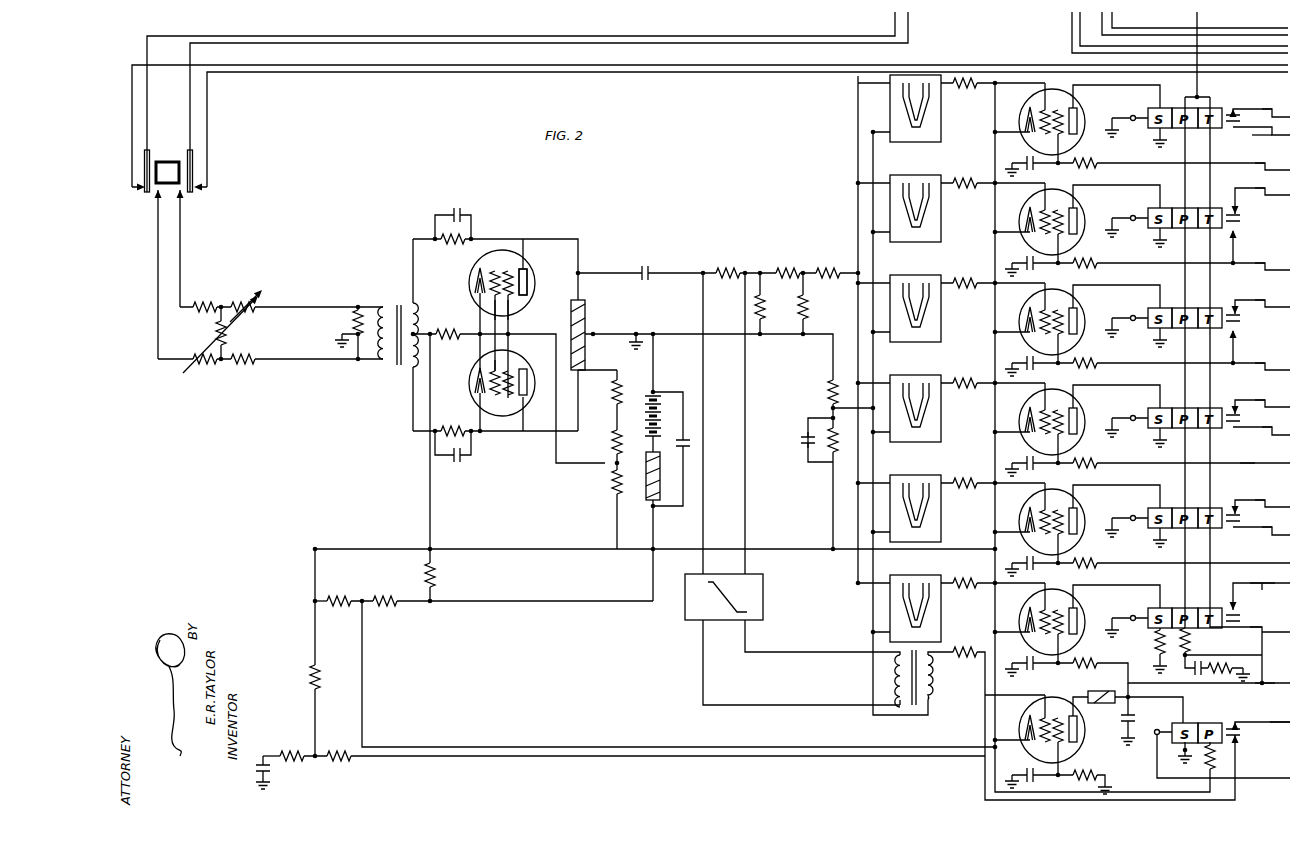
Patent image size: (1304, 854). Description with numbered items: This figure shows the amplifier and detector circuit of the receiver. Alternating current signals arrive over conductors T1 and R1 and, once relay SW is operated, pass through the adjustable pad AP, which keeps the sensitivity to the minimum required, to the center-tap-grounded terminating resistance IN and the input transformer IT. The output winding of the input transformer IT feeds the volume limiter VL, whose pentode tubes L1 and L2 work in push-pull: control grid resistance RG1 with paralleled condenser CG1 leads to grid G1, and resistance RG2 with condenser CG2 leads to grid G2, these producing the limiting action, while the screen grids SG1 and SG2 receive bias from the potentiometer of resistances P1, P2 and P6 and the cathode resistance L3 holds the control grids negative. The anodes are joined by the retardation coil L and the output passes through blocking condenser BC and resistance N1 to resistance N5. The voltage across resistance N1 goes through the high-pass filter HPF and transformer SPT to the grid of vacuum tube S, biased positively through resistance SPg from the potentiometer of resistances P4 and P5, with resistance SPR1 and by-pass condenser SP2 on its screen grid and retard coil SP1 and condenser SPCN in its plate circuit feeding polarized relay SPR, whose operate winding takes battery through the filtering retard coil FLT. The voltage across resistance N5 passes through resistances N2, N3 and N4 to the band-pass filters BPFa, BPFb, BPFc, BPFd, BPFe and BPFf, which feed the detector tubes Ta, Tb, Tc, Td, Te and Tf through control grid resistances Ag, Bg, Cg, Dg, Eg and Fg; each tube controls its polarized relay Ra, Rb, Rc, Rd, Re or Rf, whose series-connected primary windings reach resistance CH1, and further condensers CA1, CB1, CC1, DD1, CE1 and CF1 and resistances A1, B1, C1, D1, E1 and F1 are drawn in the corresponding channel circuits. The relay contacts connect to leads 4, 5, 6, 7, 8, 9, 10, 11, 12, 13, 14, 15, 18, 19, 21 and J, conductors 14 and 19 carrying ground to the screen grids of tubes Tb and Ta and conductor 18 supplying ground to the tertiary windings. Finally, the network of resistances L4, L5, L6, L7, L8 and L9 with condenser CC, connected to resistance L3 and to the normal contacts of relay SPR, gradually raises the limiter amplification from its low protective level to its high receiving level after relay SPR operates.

The trunk conductor T1 is at (147, 49).
The trunk conductor R1 is at (190, 49).
The relay SW is at (167, 162).
The adjustable pad AP is at (226, 305).
The terminating resistance IN is at (361, 322).
The input transformer IT is at (402, 366).
The cathode resistance L3 is at (448, 330).
The resistance L7 is at (441, 575).
The control grid resistance RG1 is at (453, 249).
The condenser CG1 is at (457, 208).
The volume limiter VL is at (502, 302).
The grid G1 is at (494, 310).
The grid G2 is at (494, 362).
The screen grid SG1 is at (512, 306).
The vacuum tube L1 is at (530, 288).
The vacuum tube L2 is at (519, 362).
The screen grid SG2 is at (508, 398).
The control grid resistance RG2 is at (450, 426).
The condenser CG2 is at (460, 463).
The retardation coil L is at (596, 333).
The blocking condenser BC is at (647, 266).
The resistance N1 is at (729, 267).
The resistance N2 is at (788, 267).
The resistance N3 is at (828, 267).
The resistance N4 is at (809, 311).
The resistance N5 is at (766, 311).
The potentiometer resistance P6 is at (612, 390).
The potentiometer resistance P1 is at (612, 446).
The potentiometer resistance P2 is at (612, 484).
The filtering retard coil FLT is at (639, 488).
The potentiometer resistance P4 is at (827, 393).
The potentiometer resistance P5 is at (828, 446).
The high-pass filter HPF is at (764, 583).
The input transformer SPT is at (912, 705).
The control grid resistance SPg is at (968, 658).
The resistance L5 is at (344, 598).
The resistance L4 is at (388, 598).
The resistance L6 is at (310, 677).
The resistance L8 is at (298, 751).
The resistance L9 is at (344, 752).
The condenser CC is at (274, 772).
The band-pass filter BPFf is at (890, 77).
The control grid resistance Fg is at (965, 88).
The vacuum tube Tf is at (1079, 110).
The condenser CF1 is at (1027, 160).
The resistor F1 is at (1092, 160).
The polarized relay Rf is at (1213, 108).
The relay contact lead 4 is at (1262, 109).
The contact of relay KP3 5 is at (1252, 135).
The lead 6 is at (1262, 163).
The band-pass filter BPFe is at (915, 199).
The control grid resistance Eg is at (965, 188).
The vacuum tube Te is at (1079, 210).
The condenser CE1 is at (1027, 260).
The resistor E1 is at (1092, 260).
The polarized relay Re is at (1213, 208).
The contacts of relay KP3 7 is at (1265, 195).
The lead 8 is at (1262, 263).
The band-pass filter BPFd is at (915, 299).
The control grid resistance Dg is at (965, 288).
The vacuum tube Td is at (1079, 310).
The condenser DD1 is at (1027, 360).
The resistor D1 is at (1092, 360).
The polarized relay Rd is at (1213, 308).
The lead 9 is at (1265, 300).
The lead 10 is at (1265, 363).
The band-pass filter BPFc is at (915, 399).
The control grid resistance Cg is at (965, 388).
The vacuum tube Tc is at (1079, 410).
The condenser CC1 is at (1027, 460).
The resistor C1 is at (1092, 460).
The polarized relay Rc is at (1213, 408).
The lead 11 is at (1265, 400).
The lead 12 is at (1272, 435).
The lead 15 is at (1246, 463).
The band-pass filter BPFb is at (915, 499).
The control grid resistance Bg is at (965, 488).
The vacuum tube Tb is at (1079, 510).
The condenser CB1 is at (1027, 560).
The resistor B1 is at (1092, 560).
The polarized relay Rb is at (1213, 508).
The lead 13 is at (1266, 500).
The conductor 14 is at (1272, 535).
The band-pass filter BPFa is at (915, 599).
The control grid resistance Ag is at (965, 588).
The vacuum tube Ta is at (1079, 610).
The condenser CA1 is at (1027, 660).
The resistor A1 is at (1092, 660).
The polarized relay Ra is at (1213, 608).
The resistance CH1 is at (1191, 640).
The lead 21 is at (1262, 590).
The conductor 18 is at (1262, 632).
The conductor 19 is at (1264, 686).
The vacuum tube S is at (1052, 697).
The retard coil SP1 is at (1106, 690).
The condenser SPCN is at (1132, 716).
The polarized relay SPR is at (1214, 723).
The resistance SPR1 is at (1097, 768).
The condenser SP2 is at (1010, 774).
The lead J is at (1282, 724).